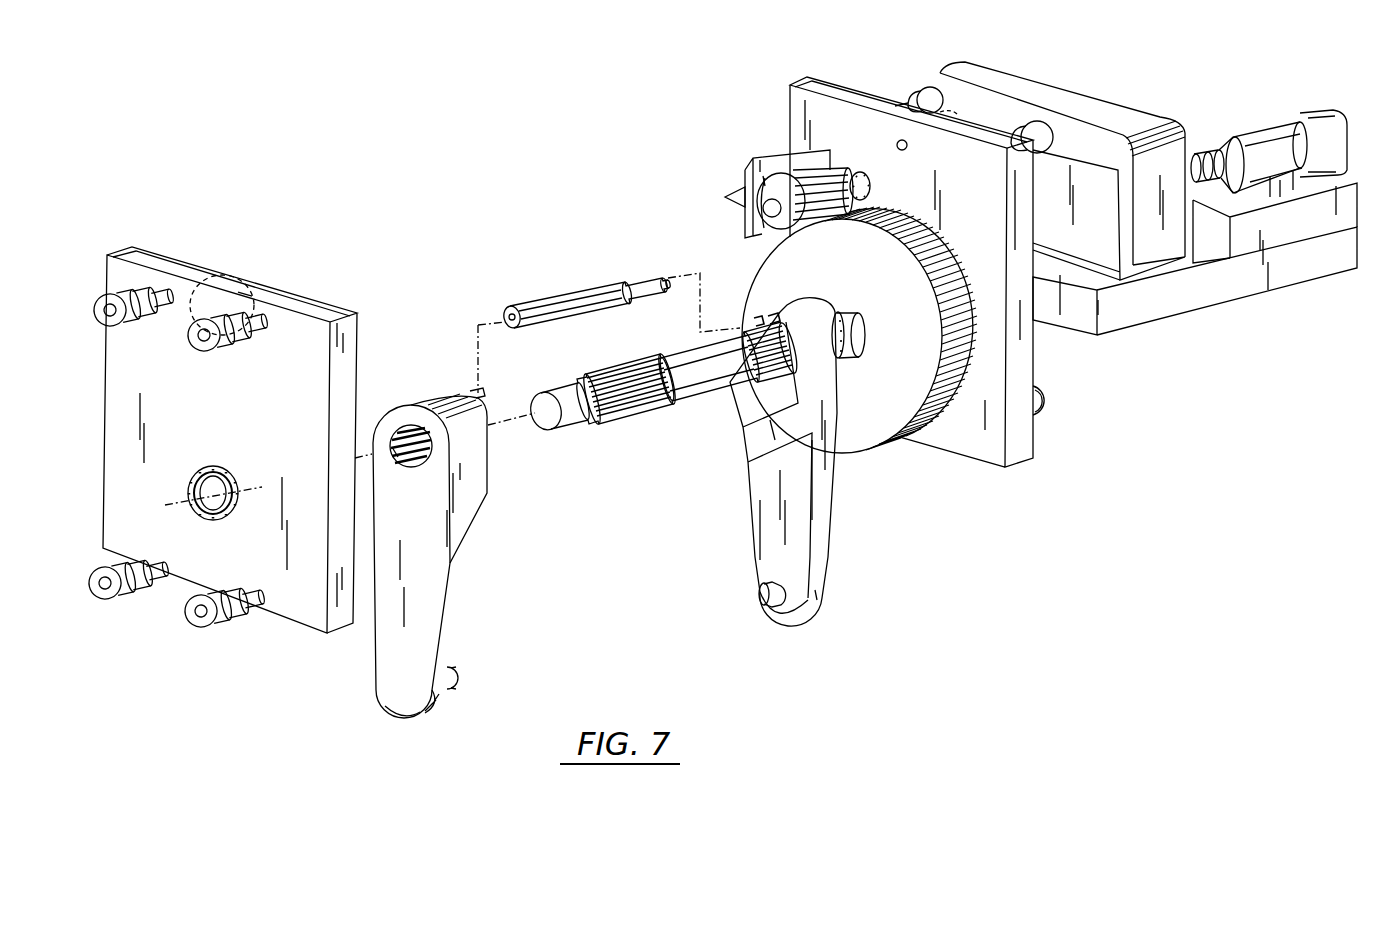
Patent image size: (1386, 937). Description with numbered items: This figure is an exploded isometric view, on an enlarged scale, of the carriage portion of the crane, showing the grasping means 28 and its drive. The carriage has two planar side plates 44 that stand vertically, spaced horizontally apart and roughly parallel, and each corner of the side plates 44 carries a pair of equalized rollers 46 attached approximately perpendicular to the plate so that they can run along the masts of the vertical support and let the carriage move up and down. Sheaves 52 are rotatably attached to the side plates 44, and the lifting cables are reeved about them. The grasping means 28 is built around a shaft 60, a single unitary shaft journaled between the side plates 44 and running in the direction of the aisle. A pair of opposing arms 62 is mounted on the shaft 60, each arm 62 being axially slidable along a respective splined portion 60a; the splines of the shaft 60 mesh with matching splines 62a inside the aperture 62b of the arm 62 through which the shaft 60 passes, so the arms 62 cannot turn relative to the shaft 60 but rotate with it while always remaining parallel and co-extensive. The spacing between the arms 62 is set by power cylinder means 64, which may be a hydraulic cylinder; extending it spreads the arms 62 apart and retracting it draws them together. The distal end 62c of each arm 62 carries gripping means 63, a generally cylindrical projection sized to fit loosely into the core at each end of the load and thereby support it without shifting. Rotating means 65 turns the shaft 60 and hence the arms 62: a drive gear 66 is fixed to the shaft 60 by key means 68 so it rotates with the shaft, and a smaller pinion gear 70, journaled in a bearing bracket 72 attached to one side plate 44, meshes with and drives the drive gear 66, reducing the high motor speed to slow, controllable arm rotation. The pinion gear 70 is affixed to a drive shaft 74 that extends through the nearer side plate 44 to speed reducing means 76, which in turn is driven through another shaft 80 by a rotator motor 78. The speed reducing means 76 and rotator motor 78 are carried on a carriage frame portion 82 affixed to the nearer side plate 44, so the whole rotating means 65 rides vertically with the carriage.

The grasping means 28 is at (844, 564).
The side plate 44 is at (362, 328).
The equalized rollers 46 is at (197, 350).
The sheave 52 is at (240, 297).
The shaft means 60 is at (664, 395).
The splined portion 60a is at (630, 407).
The arm 62 is at (587, 531).
The splines 62a is at (395, 432).
The aperture 62b is at (395, 470).
The distal end 62c is at (413, 717).
The gripping means 63 is at (455, 680).
The power cylinder means 64 is at (588, 296).
The rotating means 65 is at (1159, 344).
The drive gear 66 is at (887, 445).
The key means 68 is at (840, 307).
The pinion gear 70 is at (840, 170).
The bearing bracket 72 is at (763, 163).
The drive shaft 74 is at (872, 182).
The speed reducing means 76 is at (1073, 90).
The rotator motor 78 is at (1273, 127).
The shaft 80 is at (1198, 160).
The carriage frame portion 82 is at (1270, 273).